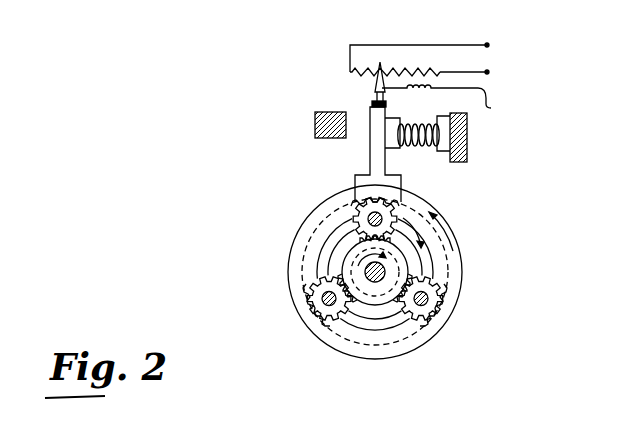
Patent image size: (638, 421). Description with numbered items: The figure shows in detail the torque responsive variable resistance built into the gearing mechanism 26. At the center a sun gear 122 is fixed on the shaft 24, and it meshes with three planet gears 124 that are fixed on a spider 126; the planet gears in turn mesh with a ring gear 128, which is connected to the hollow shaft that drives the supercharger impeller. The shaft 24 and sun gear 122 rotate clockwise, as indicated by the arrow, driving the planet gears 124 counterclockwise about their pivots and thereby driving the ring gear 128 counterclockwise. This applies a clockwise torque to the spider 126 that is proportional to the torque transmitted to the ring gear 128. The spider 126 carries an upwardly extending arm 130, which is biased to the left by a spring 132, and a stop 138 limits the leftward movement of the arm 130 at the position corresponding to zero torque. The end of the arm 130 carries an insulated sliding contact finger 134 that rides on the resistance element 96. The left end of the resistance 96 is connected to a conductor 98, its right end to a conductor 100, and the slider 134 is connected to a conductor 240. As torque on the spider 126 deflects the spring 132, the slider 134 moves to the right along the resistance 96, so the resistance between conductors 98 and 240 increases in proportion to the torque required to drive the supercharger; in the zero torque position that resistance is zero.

The shaft 24 is at (384, 268).
The gearing mechanism 26 is at (286, 243).
The variable resistance 96 is at (350, 72).
The conductor 98 is at (452, 45).
The conductor 100 is at (447, 72).
The sun gear 122 is at (381, 298).
The planet gears 124 is at (383, 216).
The spider 126 is at (431, 276).
The ring gear 128 is at (450, 222).
The arm 130 is at (370, 155).
The spring 132 is at (400, 147).
The sliding contact finger 134 is at (388, 98).
The stop 138 is at (315, 125).
The conductor 240 is at (451, 101).